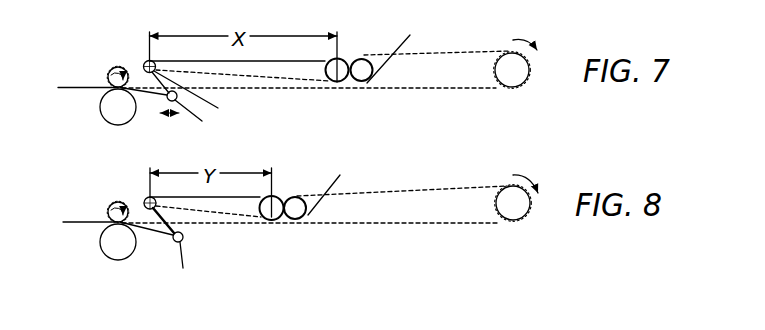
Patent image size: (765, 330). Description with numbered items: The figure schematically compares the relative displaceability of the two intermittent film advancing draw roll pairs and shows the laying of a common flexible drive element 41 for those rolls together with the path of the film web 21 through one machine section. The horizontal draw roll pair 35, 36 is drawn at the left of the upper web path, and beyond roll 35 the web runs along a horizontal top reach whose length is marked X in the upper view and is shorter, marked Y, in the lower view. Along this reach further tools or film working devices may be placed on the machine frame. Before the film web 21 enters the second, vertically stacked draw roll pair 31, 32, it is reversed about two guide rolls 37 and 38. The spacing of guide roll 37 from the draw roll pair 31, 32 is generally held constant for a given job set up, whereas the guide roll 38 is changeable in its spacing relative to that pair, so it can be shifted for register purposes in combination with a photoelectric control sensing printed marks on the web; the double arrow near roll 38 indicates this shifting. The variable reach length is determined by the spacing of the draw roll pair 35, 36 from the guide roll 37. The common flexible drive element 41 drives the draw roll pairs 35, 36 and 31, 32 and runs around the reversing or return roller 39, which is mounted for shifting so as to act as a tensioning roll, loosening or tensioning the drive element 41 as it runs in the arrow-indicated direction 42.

In FIG. 7, the film web 21 is at (398, 50).
In FIG. 8, the film web 21 is at (328, 188).
In FIG. 7, the draw roll 31 is at (114, 71).
In FIG. 8, the draw roll 31 is at (112, 213).
In FIG. 7, the draw roll 32 is at (107, 122).
In FIG. 8, the draw roll 32 is at (115, 257).
In FIG. 7, the draw roll 35 is at (337, 82).
In FIG. 8, the draw roll 35 is at (272, 218).
In FIG. 7, the draw roll 36 is at (363, 82).
In FIG. 8, the draw roll 36 is at (293, 218).
In FIG. 7, the guide roll 37 is at (200, 96).
In FIG. 7, the guide roll 38 is at (172, 106).
In FIG. 8, the guide roll 38 is at (166, 251).
In FIG. 7, the return roller 39 is at (515, 75).
In FIG. 8, the return roller 39 is at (515, 210).
In FIG. 7, the flexible drive element 41 is at (480, 89).
In FIG. 8, the flexible drive element 41 is at (455, 225).
In FIG. 7, the arrow-indicated direction 42 is at (528, 40).
In FIG. 8, the arrow-indicated direction 42 is at (532, 175).